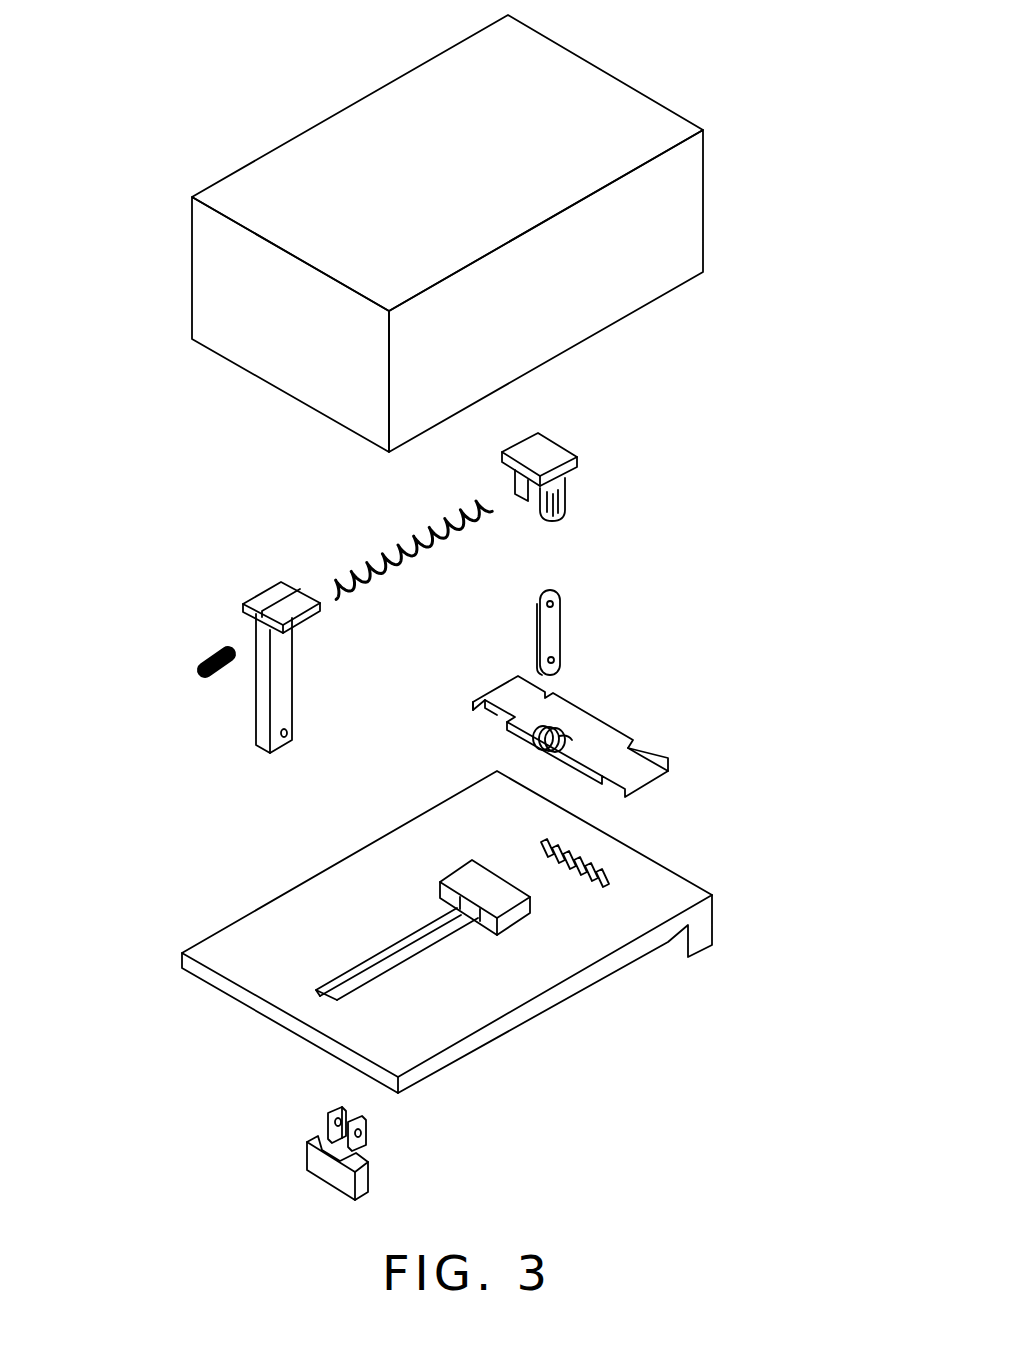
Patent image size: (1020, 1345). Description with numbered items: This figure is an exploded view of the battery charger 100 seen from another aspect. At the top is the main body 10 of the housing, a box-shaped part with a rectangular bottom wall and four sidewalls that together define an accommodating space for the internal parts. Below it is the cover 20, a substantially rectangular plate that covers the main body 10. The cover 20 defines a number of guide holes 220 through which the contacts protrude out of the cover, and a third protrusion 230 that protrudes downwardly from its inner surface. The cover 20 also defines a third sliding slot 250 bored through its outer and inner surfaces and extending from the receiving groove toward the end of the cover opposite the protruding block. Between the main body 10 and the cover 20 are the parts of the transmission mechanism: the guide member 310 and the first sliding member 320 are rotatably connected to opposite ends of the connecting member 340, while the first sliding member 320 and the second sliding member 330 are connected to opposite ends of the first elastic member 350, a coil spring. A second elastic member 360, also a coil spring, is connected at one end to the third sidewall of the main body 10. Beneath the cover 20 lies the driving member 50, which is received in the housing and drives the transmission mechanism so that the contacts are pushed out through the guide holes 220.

The battery charger 100 is at (183, 78).
The main body 10 is at (625, 118).
The cover 20 is at (503, 932).
The driving member 50 is at (315, 1172).
The guide holes 220 is at (600, 855).
The third protrusion 230 is at (467, 882).
The third sliding slot 250 is at (386, 968).
The guide member 310 is at (640, 767).
The first sliding member 320 is at (577, 458).
The second sliding member 330 is at (263, 598).
The connecting member 340 is at (553, 633).
The first elastic member 350 is at (398, 545).
The second elastic member 360 is at (197, 646).